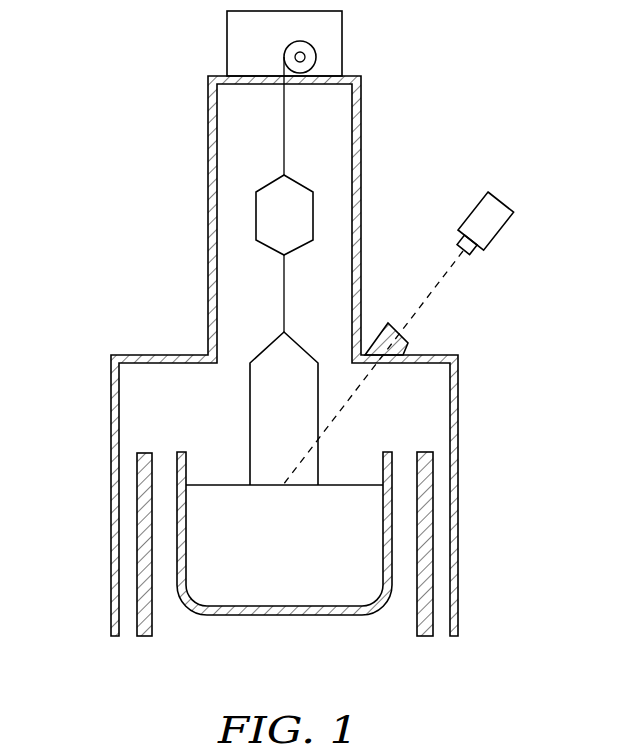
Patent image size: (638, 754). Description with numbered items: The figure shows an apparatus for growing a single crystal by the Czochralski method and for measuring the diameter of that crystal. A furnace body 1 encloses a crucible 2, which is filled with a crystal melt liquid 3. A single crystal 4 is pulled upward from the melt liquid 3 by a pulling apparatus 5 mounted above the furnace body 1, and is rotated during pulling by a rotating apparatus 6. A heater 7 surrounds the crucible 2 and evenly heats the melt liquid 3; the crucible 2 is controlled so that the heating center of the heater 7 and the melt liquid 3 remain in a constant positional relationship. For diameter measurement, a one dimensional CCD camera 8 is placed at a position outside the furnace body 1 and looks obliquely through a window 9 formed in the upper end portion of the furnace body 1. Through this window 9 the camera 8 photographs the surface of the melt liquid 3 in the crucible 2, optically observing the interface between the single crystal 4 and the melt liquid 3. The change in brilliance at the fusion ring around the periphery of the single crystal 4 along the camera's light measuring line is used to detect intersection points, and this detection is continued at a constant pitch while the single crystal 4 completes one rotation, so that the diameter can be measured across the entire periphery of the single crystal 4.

The furnace body 1 is at (458, 433).
The crucible 2 is at (229, 616).
The crystal melt liquid 3 is at (275, 552).
The single crystal 4 is at (250, 399).
The pulling apparatus 5 is at (313, 53).
The rotating apparatus 6 is at (227, 34).
The heater 7 is at (142, 537).
The one dimensional CCD camera 8 is at (473, 212).
The window 9 is at (408, 337).